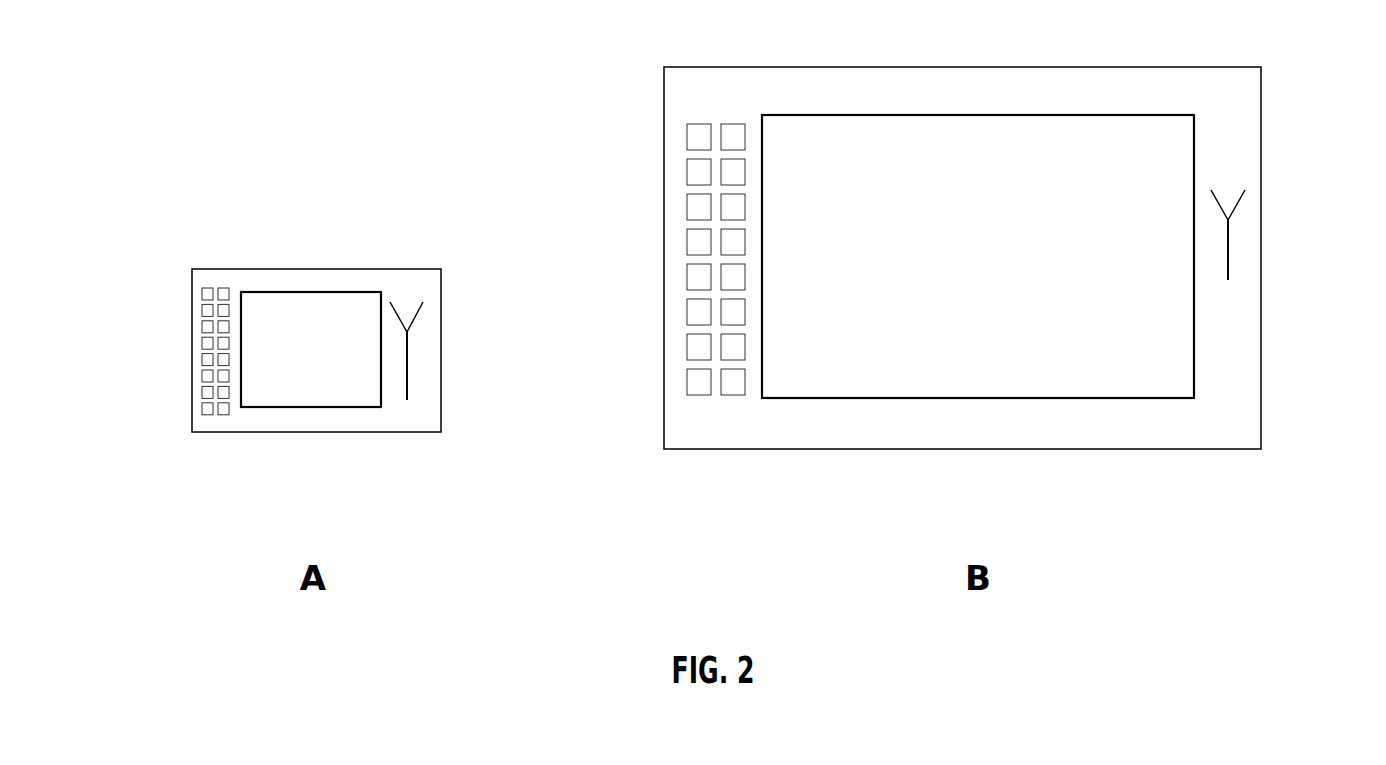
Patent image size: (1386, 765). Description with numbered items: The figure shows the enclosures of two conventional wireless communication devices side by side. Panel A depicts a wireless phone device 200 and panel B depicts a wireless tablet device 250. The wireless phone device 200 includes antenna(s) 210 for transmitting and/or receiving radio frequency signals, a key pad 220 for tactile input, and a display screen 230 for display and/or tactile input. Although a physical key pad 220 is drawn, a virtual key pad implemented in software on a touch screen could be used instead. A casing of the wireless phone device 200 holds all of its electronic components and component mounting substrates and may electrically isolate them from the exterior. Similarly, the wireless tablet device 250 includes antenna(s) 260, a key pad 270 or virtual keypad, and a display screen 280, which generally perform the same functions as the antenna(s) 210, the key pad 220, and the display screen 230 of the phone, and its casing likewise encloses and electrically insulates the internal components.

The wireless phone device 200 is at (296, 267).
The antenna(s) 210 is at (413, 352).
The key pad 220 is at (231, 410).
The display screen 230 is at (363, 402).
The wireless tablet device 250 is at (923, 65).
The antenna(s) 260 is at (1236, 232).
The key pad 270 is at (728, 370).
The display screen 280 is at (1010, 383).